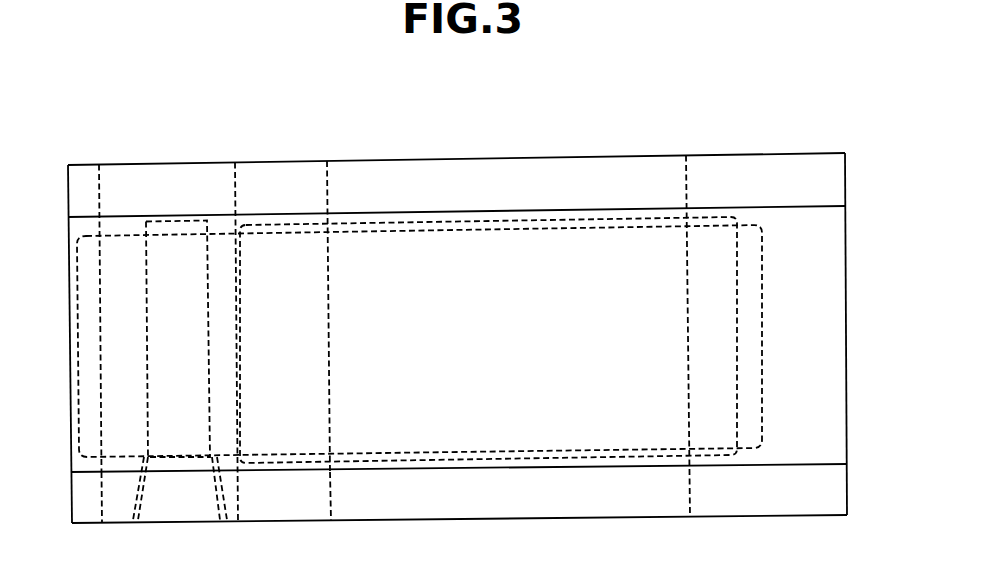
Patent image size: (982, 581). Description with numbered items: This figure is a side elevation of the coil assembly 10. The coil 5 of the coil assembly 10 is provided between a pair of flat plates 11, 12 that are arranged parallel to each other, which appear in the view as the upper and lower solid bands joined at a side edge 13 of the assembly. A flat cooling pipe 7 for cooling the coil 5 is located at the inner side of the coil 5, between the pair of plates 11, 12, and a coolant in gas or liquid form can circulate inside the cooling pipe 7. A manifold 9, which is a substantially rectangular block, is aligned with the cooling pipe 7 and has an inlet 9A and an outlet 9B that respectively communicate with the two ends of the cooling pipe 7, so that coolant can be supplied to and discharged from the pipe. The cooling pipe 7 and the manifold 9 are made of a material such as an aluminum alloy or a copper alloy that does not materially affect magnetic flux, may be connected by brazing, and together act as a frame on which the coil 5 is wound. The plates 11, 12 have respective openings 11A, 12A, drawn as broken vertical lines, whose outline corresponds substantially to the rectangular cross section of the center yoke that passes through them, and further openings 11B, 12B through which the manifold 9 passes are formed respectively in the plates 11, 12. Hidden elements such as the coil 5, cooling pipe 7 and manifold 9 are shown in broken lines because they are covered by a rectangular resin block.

The coil assembly 10 is at (664, 87).
The flat plate 12 is at (735, 158).
The opening 12A is at (330, 177).
The opening 12B is at (100, 177).
The flat plate 11 is at (783, 508).
The opening 11A is at (332, 508).
The opening 11B is at (106, 510).
The side edge 13 is at (846, 318).
The coil 5 is at (79, 282).
The flat cooling pipe 7 is at (543, 220).
The manifold 9 is at (138, 222).
The inlet 9A is at (218, 498).
The outlet 9B is at (196, 515).